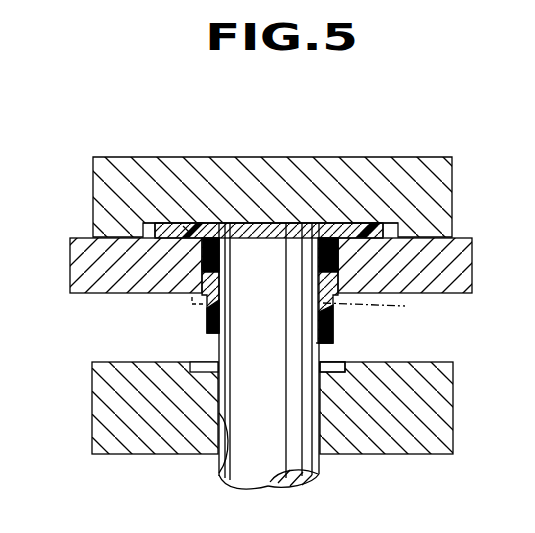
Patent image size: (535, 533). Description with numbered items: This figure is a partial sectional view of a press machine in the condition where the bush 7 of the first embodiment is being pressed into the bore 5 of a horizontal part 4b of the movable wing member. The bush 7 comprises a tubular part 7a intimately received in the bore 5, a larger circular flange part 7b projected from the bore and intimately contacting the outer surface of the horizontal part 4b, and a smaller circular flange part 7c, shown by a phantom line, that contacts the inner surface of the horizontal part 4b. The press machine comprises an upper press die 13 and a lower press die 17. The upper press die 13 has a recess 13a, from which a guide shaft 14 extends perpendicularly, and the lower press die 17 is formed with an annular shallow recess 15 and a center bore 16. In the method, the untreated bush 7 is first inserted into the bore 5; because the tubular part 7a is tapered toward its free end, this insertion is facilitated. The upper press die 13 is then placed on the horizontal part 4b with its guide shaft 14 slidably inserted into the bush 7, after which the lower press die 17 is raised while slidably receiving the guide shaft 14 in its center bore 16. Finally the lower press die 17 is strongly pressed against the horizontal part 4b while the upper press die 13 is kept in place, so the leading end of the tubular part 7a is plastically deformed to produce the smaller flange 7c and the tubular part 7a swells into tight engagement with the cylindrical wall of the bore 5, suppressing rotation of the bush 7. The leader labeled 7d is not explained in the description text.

The horizontal part 4b is at (78, 236).
The bore 5 is at (320, 262).
The bush 7 is at (363, 222).
The tubular part 7a is at (201, 262).
The larger circular flange part 7b is at (186, 232).
The smaller circular flange part 7c is at (379, 312).
The bushing lower end 7d is at (208, 313).
The upper press die 13 is at (400, 172).
The recess 13a is at (318, 252).
The guide shaft 14 is at (316, 343).
The annular shallow recess 15 is at (338, 362).
The center bore 16 is at (218, 457).
The lower press die 17 is at (447, 400).